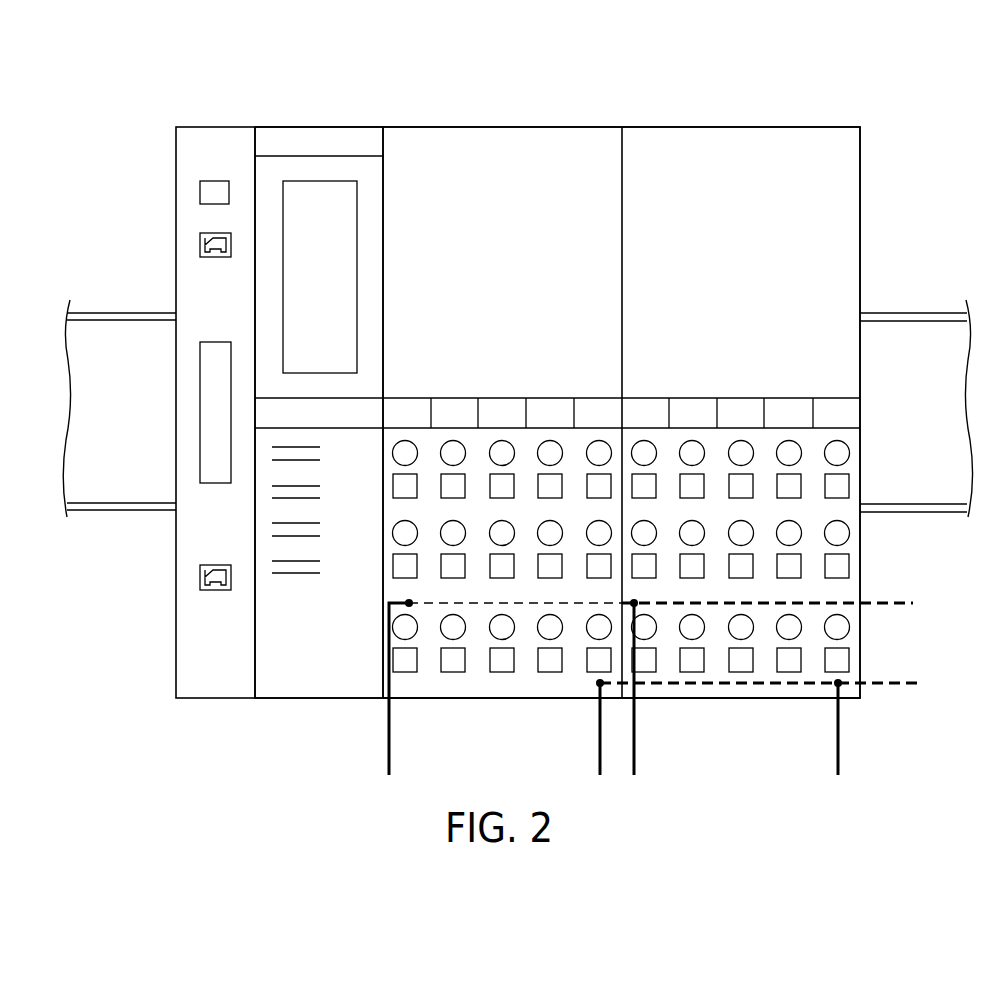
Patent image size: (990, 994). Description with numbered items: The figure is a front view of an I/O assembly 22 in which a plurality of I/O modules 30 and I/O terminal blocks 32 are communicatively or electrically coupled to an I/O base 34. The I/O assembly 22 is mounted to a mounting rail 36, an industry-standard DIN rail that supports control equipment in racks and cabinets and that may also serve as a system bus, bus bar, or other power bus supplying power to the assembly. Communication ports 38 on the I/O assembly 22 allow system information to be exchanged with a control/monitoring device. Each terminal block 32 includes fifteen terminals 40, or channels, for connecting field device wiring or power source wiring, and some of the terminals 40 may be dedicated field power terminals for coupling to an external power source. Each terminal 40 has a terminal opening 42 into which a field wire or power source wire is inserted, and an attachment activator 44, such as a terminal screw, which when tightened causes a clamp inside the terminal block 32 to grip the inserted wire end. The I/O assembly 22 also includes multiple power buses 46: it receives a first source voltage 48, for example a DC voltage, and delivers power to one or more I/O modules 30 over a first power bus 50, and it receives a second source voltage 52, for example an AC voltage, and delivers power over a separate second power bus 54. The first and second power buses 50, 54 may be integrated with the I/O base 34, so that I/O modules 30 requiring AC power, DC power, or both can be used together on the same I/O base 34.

The I/O assembly 22 is at (204, 76).
The I/O modules 30 is at (707, 135).
The I/O terminal blocks 32 is at (495, 690).
The I/O base 34 is at (318, 121).
The mounting rail 36 is at (912, 318).
The communication ports 38 is at (200, 194).
The terminals 40 is at (383, 497).
The terminal opening 42 is at (393, 568).
The attachment activator 44 is at (393, 535).
The power buses 46 is at (891, 612).
The first source voltage 48 is at (389, 784).
The first power bus 50 is at (910, 594).
The second source voltage 52 is at (600, 784).
The second power bus 54 is at (907, 692).